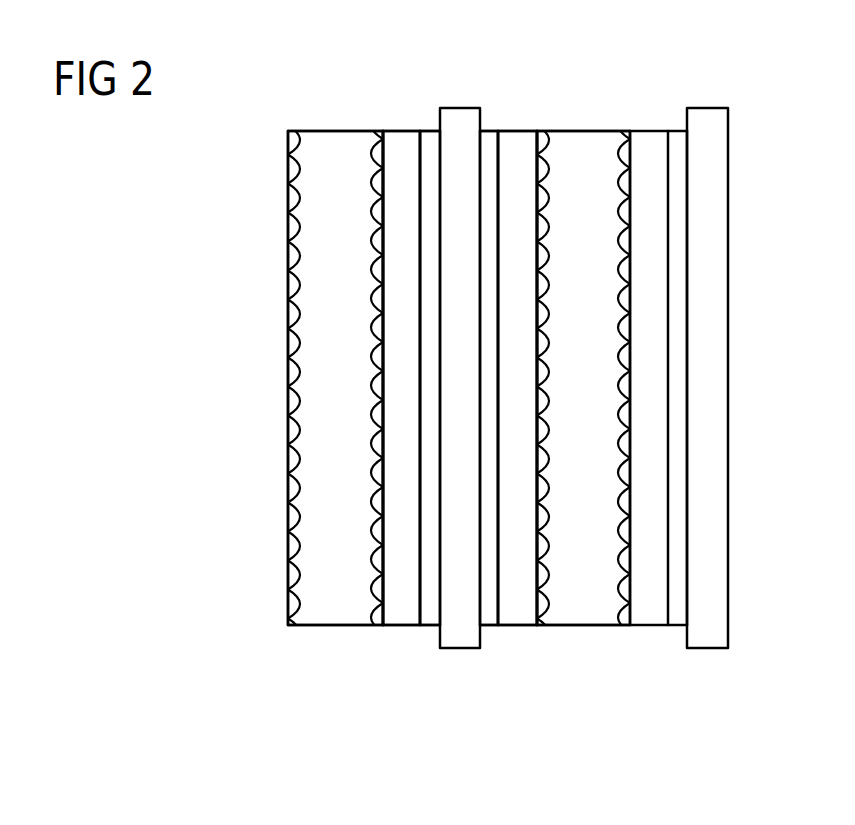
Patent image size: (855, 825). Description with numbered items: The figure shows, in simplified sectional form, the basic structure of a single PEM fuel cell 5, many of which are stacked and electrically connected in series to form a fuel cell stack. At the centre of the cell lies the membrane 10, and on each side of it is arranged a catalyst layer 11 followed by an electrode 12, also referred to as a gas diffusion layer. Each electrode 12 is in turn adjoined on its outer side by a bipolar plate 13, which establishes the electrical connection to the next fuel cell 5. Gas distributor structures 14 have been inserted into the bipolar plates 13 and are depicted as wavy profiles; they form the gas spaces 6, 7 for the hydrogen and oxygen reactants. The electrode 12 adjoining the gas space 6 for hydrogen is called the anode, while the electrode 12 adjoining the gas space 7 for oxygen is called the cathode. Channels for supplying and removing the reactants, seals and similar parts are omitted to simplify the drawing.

The fuel cell 5 is at (373, 80).
The gas space for hydrogen 6 is at (543, 478).
The gas space for oxygen 7 is at (378, 462).
The membrane 10 is at (458, 648).
The catalyst layer 11 is at (433, 628).
The electrode 12 is at (403, 628).
The bipolar plate 13 is at (342, 628).
The gas distributor structures 14 is at (372, 217).